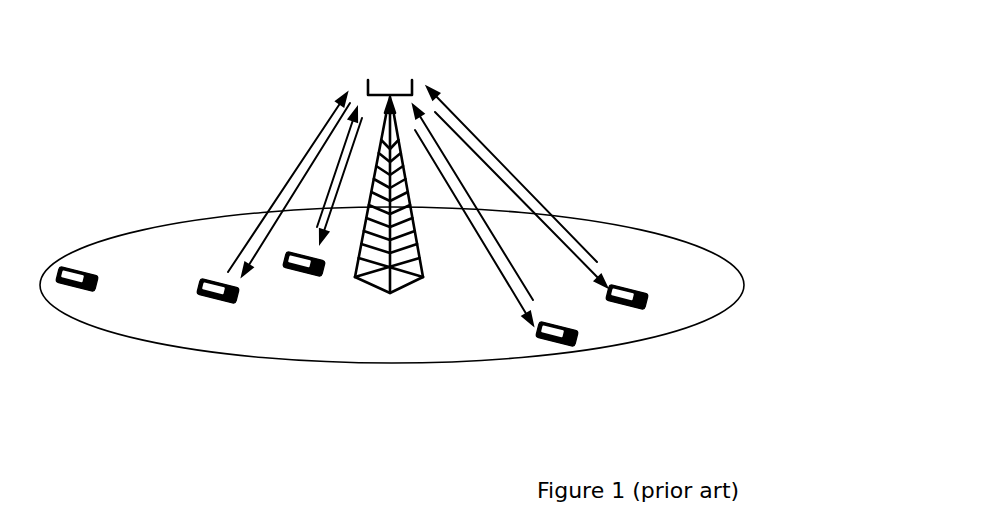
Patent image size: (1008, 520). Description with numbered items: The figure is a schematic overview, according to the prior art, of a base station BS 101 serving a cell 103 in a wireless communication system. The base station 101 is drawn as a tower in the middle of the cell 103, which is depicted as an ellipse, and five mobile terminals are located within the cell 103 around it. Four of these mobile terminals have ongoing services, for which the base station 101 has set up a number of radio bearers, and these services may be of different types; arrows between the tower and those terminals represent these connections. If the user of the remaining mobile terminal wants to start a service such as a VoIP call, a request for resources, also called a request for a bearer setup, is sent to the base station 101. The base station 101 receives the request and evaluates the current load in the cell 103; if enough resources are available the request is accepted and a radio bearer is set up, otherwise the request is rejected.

The base station 101 is at (388, 81).
The cell 103 is at (682, 258).